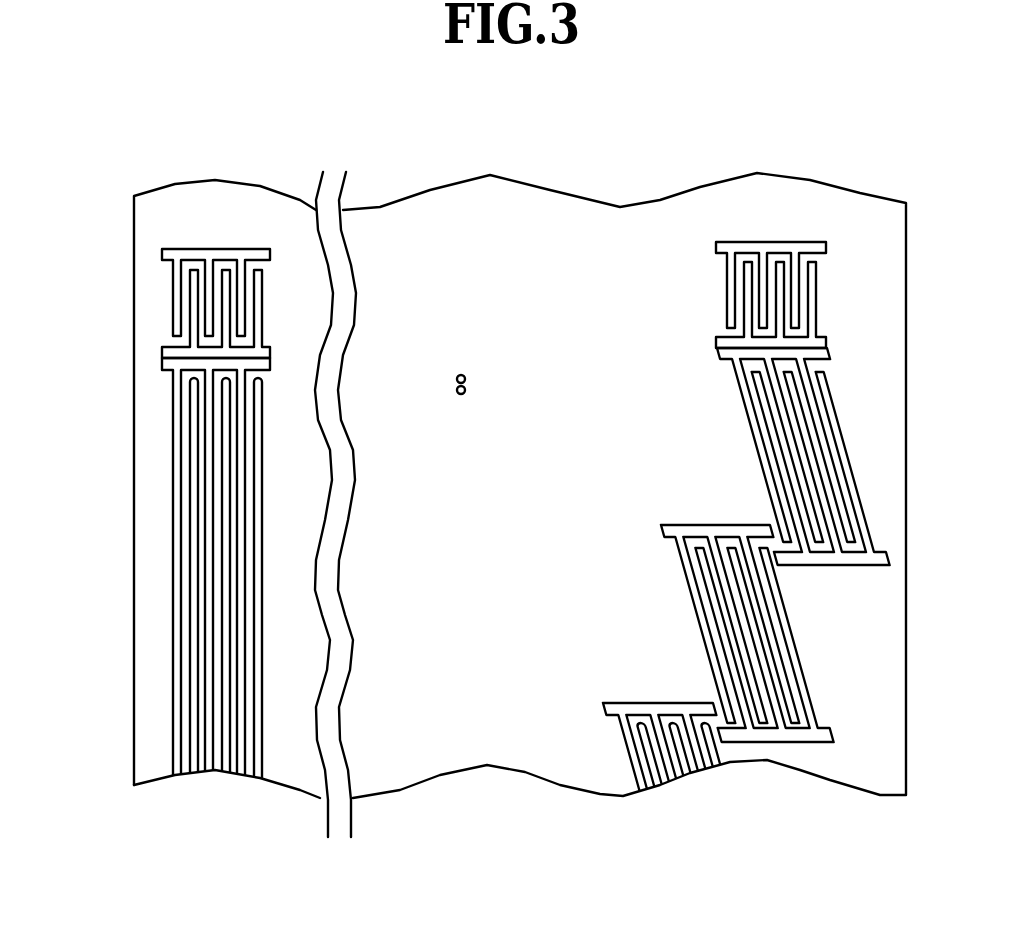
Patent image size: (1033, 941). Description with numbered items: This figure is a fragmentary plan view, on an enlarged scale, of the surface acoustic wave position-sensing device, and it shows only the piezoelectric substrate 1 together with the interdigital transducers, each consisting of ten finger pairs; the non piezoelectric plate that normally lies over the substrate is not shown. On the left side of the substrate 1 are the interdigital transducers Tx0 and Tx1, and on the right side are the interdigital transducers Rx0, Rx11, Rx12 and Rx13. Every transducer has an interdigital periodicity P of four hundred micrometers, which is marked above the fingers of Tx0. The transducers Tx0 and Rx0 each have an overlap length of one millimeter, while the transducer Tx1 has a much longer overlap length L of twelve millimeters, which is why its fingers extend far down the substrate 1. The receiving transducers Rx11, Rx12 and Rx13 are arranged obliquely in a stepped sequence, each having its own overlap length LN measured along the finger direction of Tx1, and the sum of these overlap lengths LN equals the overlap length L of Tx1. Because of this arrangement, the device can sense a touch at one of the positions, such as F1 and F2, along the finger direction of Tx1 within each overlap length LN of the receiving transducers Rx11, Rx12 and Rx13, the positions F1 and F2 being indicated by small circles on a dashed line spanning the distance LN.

The piezoelectric substrate 1 is at (510, 225).
The interdigital periodicity P is at (245, 235).
The interdigital transducer Tx0 is at (158, 303).
The interdigital transducer Tx1 is at (158, 569).
The interdigital transducer Rx0 is at (794, 229).
The interdigital transducer Rx11 is at (811, 456).
The interdigital transducer Rx12 is at (781, 633).
The interdigital transducer Rx13 is at (714, 779).
The touch position F1 is at (492, 344).
The touch position F2 is at (493, 422).
The overlap length LN is at (502, 374).